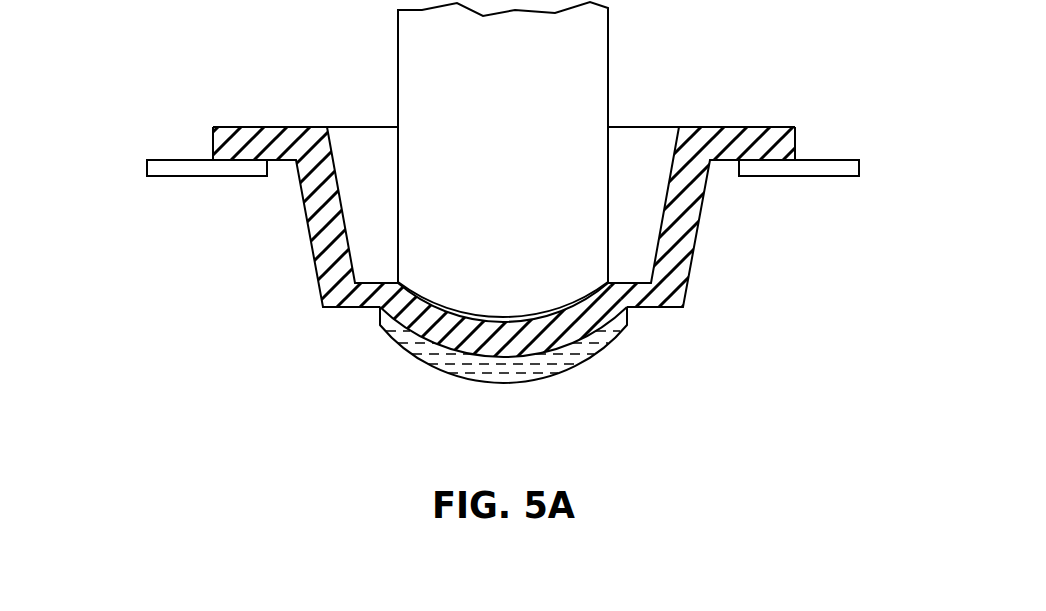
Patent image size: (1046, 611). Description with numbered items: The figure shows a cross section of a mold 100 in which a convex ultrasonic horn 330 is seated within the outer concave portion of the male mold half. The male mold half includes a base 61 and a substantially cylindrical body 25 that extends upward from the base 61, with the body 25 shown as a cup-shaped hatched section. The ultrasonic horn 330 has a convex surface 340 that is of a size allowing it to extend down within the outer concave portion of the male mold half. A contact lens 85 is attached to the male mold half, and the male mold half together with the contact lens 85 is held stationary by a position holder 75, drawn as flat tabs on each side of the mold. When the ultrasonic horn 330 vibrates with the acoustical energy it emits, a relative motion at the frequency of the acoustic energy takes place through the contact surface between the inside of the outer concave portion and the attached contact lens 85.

The mold 100 is at (765, 58).
The substantially cylindrical body 25 is at (683, 207).
The base 61 is at (772, 127).
The position holder 75 is at (147, 166).
The ultrasonic horn 330 is at (398, 53).
The convex surface 340 is at (548, 310).
The contact lens 85 is at (570, 367).